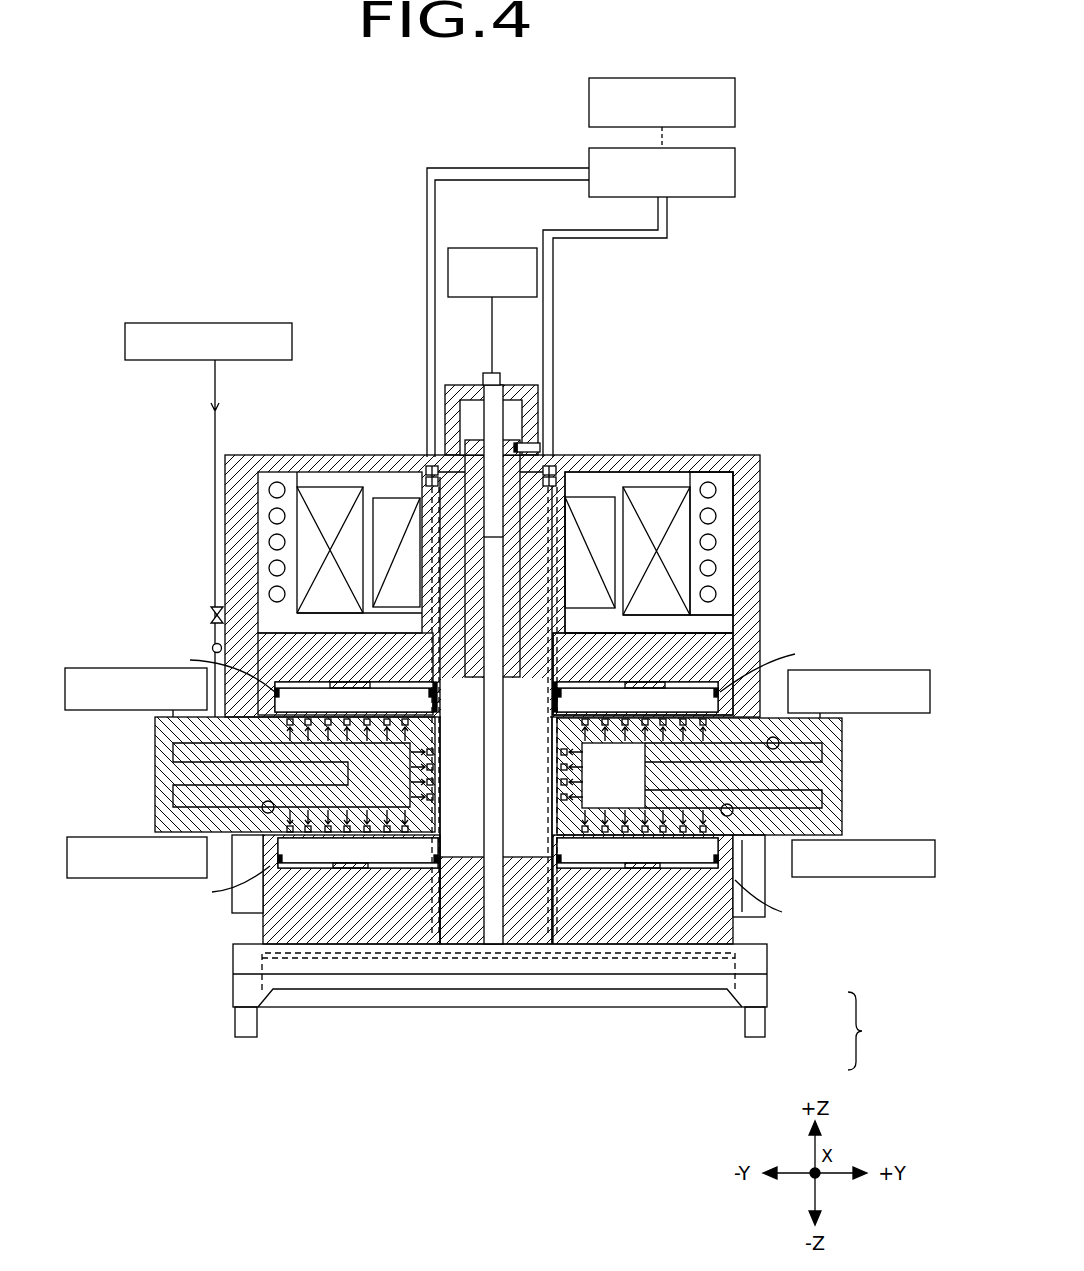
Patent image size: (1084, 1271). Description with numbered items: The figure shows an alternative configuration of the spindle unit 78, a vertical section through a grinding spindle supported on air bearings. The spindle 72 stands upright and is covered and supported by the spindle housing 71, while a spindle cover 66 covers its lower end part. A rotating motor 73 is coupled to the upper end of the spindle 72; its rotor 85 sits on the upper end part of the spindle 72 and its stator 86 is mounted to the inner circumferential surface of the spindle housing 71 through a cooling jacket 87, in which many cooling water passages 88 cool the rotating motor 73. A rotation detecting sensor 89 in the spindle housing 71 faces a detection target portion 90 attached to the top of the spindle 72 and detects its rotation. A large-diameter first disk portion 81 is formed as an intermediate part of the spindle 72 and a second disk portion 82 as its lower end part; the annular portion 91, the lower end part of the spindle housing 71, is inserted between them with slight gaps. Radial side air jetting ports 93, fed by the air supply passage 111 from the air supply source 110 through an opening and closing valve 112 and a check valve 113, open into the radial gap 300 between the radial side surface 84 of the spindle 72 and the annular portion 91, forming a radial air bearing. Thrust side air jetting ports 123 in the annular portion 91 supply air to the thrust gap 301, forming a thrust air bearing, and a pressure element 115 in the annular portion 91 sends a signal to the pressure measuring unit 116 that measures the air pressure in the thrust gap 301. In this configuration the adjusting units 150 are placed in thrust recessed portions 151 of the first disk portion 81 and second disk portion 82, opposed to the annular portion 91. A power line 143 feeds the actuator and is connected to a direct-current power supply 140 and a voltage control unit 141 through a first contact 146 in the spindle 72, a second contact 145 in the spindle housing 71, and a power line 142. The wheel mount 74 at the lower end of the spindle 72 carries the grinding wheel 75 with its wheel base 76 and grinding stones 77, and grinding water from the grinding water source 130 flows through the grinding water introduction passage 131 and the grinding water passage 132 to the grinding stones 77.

The spindle cover 66 is at (765, 872).
The spindle housing 71 is at (240, 497).
The spindle 72 is at (262, 918).
The rotating motor 73 is at (632, 470).
The wheel mount 74 is at (765, 960).
The grinding wheel 75 is at (867, 1031).
The wheel base 76 is at (760, 995).
The grinding stones 77 is at (762, 1030).
The spindle unit 78 is at (196, 150).
The first disk portion 81 is at (722, 655).
The second disk portion 82 is at (735, 935).
The radial side surface 84 is at (440, 827).
The rotor 85 is at (597, 497).
The stator 86 is at (668, 490).
The cooling jacket 87 is at (720, 480).
The cooling water passages 88 is at (716, 518).
The rotation detecting sensor 89 is at (548, 445).
The detection target portion 90 is at (512, 396).
The annular portion 91 is at (842, 750).
The radial side air jetting ports 93 is at (434, 764).
The air supply source 110 is at (292, 341).
The air supply passage 111 is at (220, 469).
The opening and closing valve 112 is at (212, 607).
The check valve 113 is at (212, 645).
The pressure element 115 is at (342, 684).
The pressure measuring unit 116 is at (130, 668).
The thrust side air jetting ports 123 is at (240, 800).
The grinding water source 130 is at (502, 248).
The grinding water introduction passage 131 is at (483, 373).
The grinding water passage 132 is at (430, 622).
The direct-current power supply 140 is at (700, 78).
The voltage control unit 141 is at (735, 148).
The power line 142 is at (427, 212).
The power line 143 is at (425, 655).
The second contact 145 is at (432, 464).
The first contact 146 is at (428, 476).
The adjusting units 150 is at (340, 664).
The thrust recessed portions 151 is at (491, 782).
The radial gap 300 is at (437, 712).
The thrust gap 301 is at (437, 698).